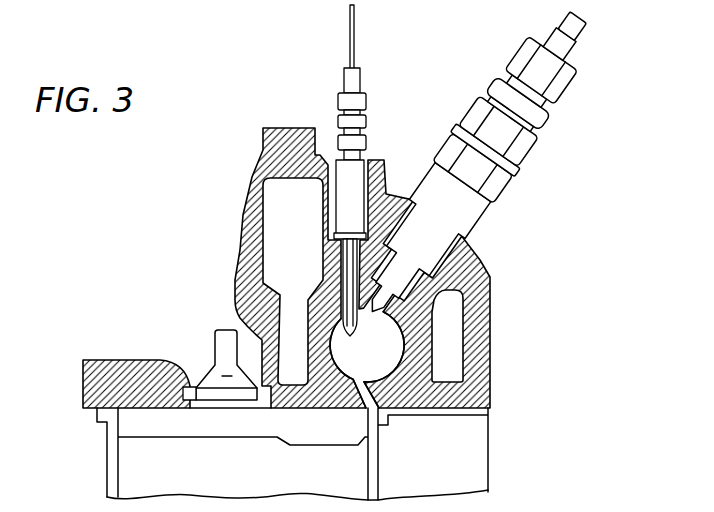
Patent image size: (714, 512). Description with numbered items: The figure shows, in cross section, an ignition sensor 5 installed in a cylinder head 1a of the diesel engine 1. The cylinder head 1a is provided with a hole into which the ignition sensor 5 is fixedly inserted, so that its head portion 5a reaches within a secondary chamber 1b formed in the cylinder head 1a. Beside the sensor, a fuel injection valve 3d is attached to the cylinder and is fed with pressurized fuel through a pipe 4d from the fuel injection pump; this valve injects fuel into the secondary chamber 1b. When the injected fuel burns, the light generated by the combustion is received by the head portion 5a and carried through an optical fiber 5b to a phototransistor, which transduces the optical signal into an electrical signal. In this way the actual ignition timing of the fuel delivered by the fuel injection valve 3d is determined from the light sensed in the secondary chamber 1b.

The diesel engine 1 is at (262, 150).
The cylinder head 1a is at (489, 287).
The secondary chamber 1b is at (392, 355).
The fuel injection valve 3d is at (483, 207).
The pipe 4d is at (579, 27).
The ignition sensor 5 is at (340, 97).
The head portion 5a is at (348, 266).
The optical fiber 5b is at (356, 49).